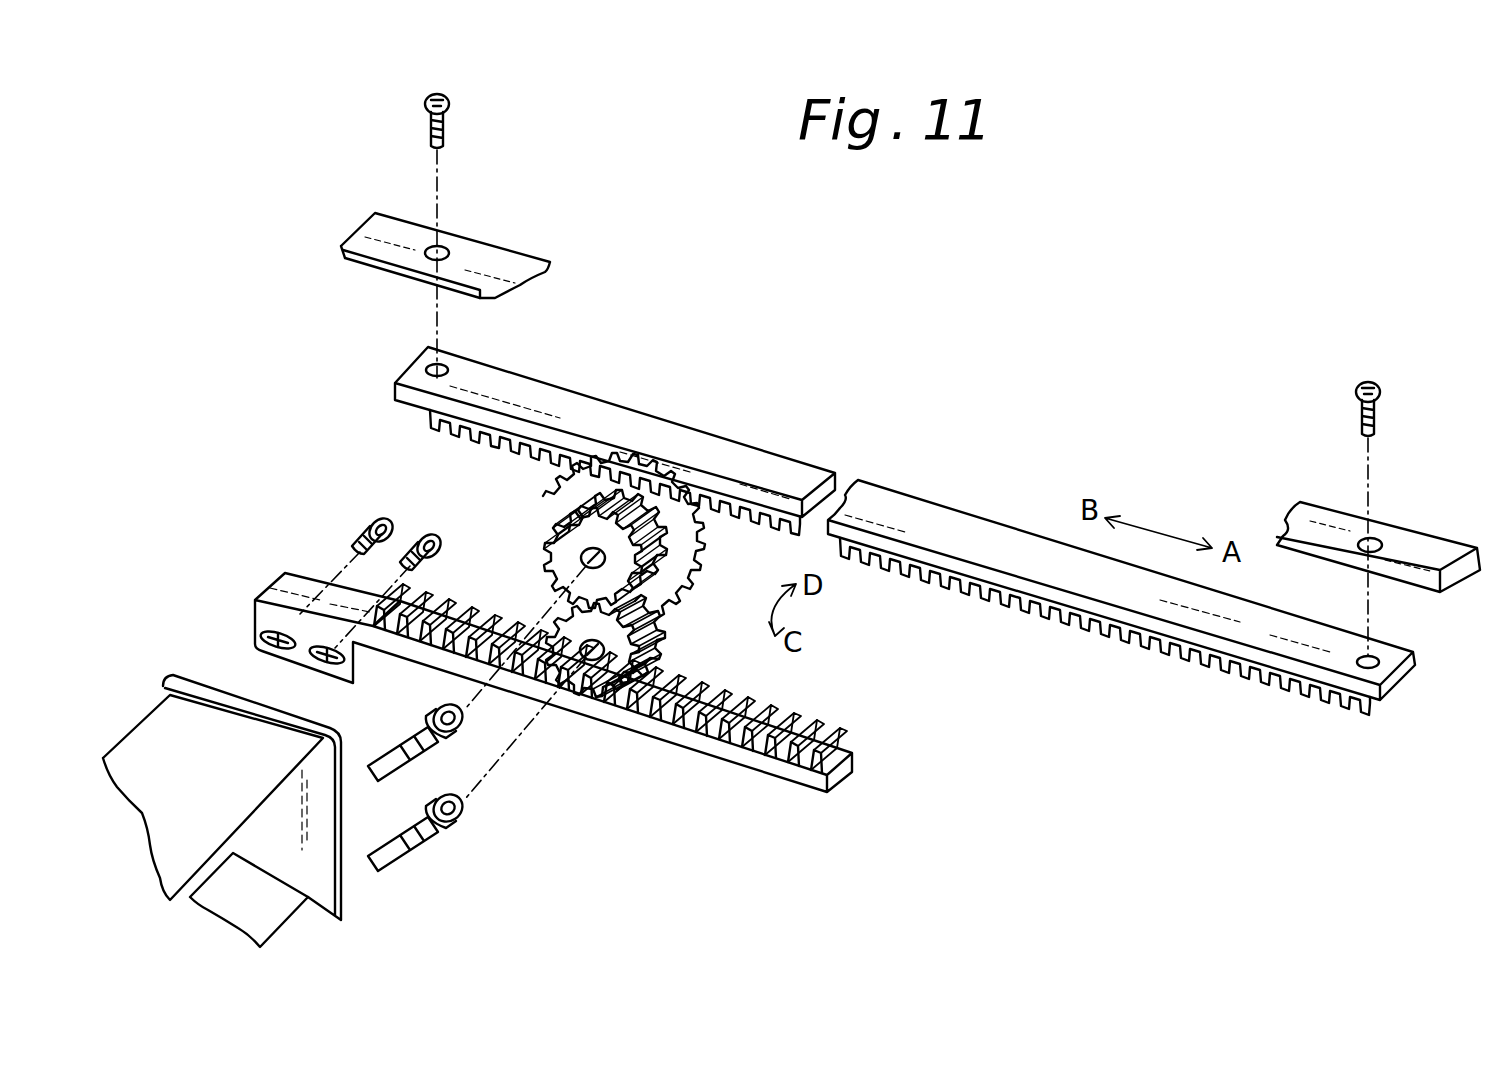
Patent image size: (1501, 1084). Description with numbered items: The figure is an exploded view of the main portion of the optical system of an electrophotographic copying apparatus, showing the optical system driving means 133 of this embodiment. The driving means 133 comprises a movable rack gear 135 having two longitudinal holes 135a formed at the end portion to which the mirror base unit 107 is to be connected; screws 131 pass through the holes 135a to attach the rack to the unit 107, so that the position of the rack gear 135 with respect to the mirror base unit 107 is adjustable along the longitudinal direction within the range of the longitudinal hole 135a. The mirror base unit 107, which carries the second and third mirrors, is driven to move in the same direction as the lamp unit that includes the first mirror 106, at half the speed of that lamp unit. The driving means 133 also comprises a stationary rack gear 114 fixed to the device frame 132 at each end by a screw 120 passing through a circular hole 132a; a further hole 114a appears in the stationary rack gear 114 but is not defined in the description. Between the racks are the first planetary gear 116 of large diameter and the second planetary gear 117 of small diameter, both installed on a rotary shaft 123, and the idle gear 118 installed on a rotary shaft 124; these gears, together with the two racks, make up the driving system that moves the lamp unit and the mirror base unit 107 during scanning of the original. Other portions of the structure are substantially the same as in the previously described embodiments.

The first mirror 106 is at (342, 890).
The mirror base unit 107 is at (150, 728).
The stationary rack gear 114 is at (775, 460).
The mounting hole of rack 114a is at (433, 366).
The first planetary gear 116 is at (706, 540).
The second planetary gear 117 is at (552, 540).
The idle gear 118 is at (556, 614).
The screw 120 is at (447, 125).
The rotary shaft 123 is at (396, 757).
The rotary shaft 124 is at (398, 850).
The screws 131 is at (384, 518).
The device frame 132 is at (508, 258).
The circular hole 132a is at (445, 248).
The optical system driving means 133 is at (978, 496).
The movable rack gear 135 is at (762, 766).
The longitudinal holes 135a is at (262, 644).